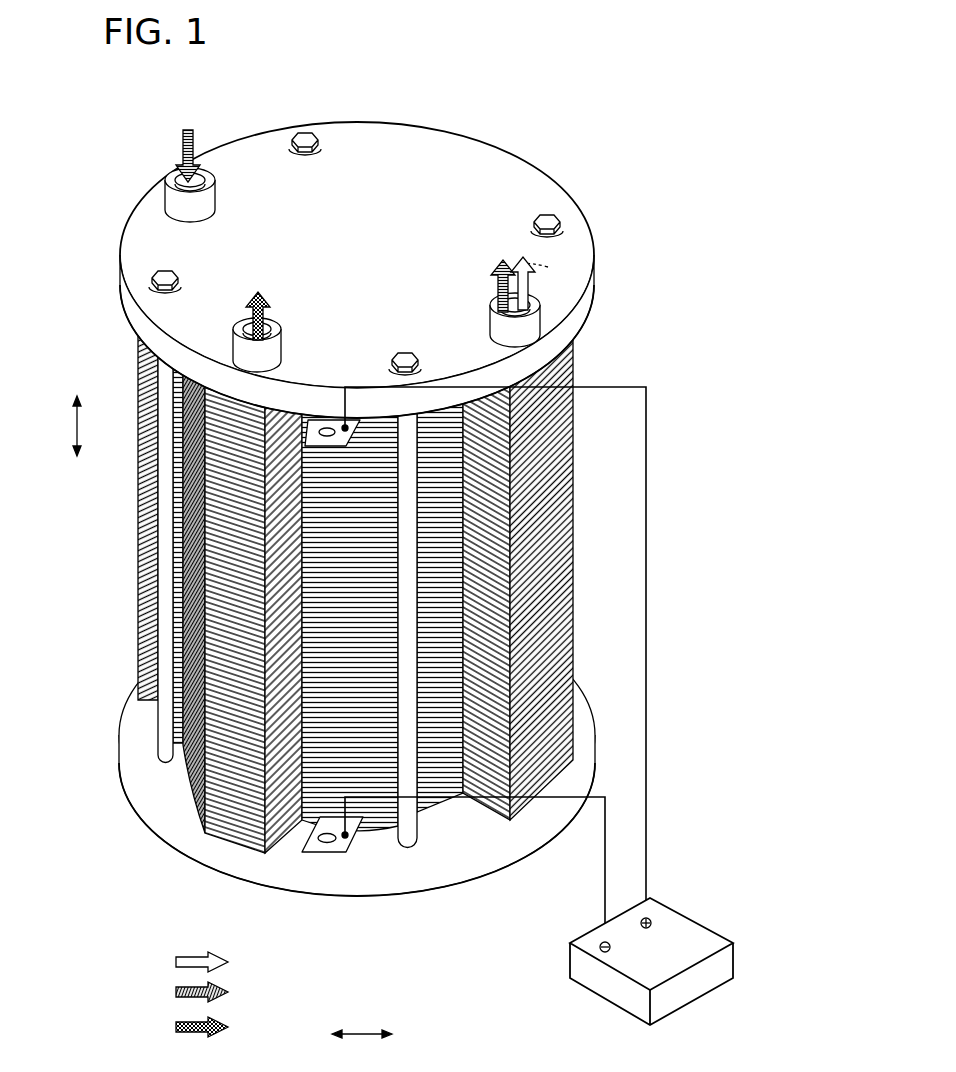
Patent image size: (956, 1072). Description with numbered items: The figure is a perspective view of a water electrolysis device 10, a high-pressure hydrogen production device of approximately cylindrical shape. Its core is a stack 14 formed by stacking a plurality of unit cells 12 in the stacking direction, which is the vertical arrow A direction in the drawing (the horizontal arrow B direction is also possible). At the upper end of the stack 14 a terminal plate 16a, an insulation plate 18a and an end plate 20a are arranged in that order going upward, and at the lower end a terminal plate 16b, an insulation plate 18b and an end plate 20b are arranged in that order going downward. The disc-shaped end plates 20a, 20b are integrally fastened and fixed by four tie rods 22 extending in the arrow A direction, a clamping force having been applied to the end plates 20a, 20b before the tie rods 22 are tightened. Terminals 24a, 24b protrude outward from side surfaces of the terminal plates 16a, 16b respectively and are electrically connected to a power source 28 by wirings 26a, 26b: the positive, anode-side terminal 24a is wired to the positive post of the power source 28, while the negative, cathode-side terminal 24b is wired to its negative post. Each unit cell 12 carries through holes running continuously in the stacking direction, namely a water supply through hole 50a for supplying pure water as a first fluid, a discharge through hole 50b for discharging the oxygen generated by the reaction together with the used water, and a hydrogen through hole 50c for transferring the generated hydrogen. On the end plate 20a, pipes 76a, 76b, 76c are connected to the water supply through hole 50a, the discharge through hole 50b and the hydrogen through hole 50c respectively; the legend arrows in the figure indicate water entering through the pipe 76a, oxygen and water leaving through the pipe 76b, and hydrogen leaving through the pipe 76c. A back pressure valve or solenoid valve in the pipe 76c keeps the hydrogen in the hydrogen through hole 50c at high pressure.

The water electrolysis device 10 is at (210, 88).
The unit cell 12 is at (178, 536).
The stack 14 is at (300, 611).
The terminal plate 16a is at (548, 267).
The terminal plate 16b is at (452, 806).
The insulation plate 18a is at (598, 286).
The insulation plate 18b is at (442, 813).
The end plate 20a is at (528, 164).
The end plate 20b is at (578, 684).
The tie rod 22 is at (409, 847).
The terminal 24a is at (312, 428).
The terminal 24b is at (330, 853).
The wiring 26a is at (648, 862).
The wiring 26b is at (604, 893).
The power source 28 is at (700, 937).
The water supply through hole 50a is at (212, 197).
The discharge through hole 50b is at (498, 331).
The hydrogen through hole 50c is at (236, 351).
The pipe 76a is at (230, 176).
The pipe 76b is at (482, 306).
The pipe 76c is at (244, 319).